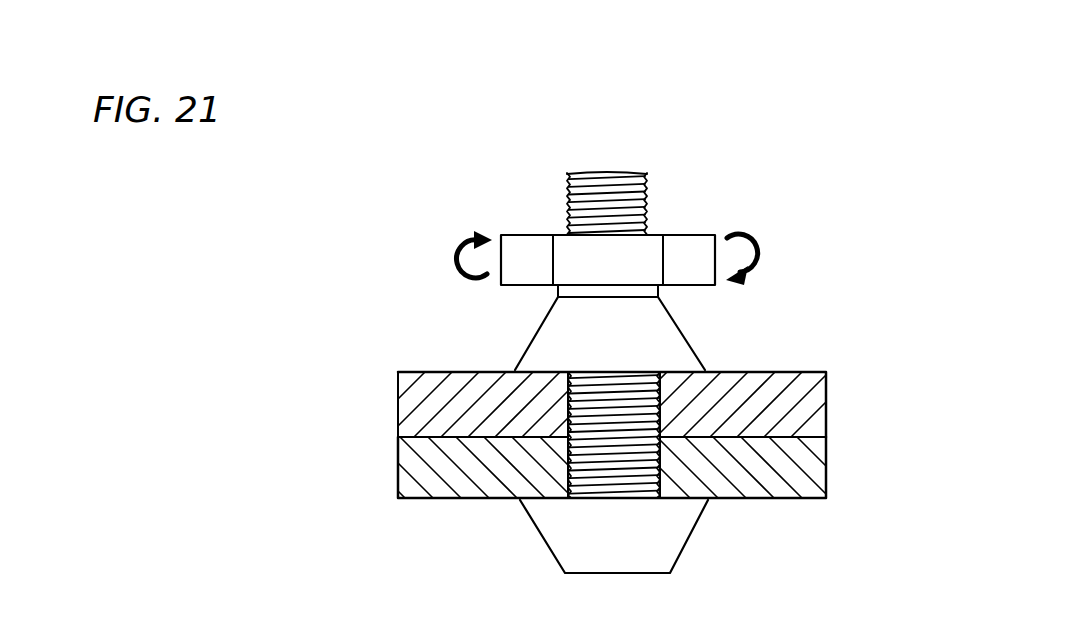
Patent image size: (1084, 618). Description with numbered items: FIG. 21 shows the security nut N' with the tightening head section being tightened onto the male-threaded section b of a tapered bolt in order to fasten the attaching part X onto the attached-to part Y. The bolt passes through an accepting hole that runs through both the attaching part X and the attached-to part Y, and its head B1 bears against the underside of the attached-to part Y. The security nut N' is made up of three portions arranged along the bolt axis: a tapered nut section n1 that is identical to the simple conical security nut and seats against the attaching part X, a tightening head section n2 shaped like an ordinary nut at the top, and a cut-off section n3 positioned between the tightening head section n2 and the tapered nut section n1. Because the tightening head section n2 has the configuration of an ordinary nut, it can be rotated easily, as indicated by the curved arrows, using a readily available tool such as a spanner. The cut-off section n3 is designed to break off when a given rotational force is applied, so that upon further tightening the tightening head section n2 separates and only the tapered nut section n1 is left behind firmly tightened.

The security nut with tightening head section N' is at (584, 251).
The male-threaded section b is at (567, 206).
The tightening head section n2 is at (688, 235).
The cut-off section n3 is at (658, 290).
The tapered nut section n1 is at (697, 347).
The attaching part X is at (826, 400).
The attached-to part Y is at (826, 470).
The bolt head B1 is at (687, 548).